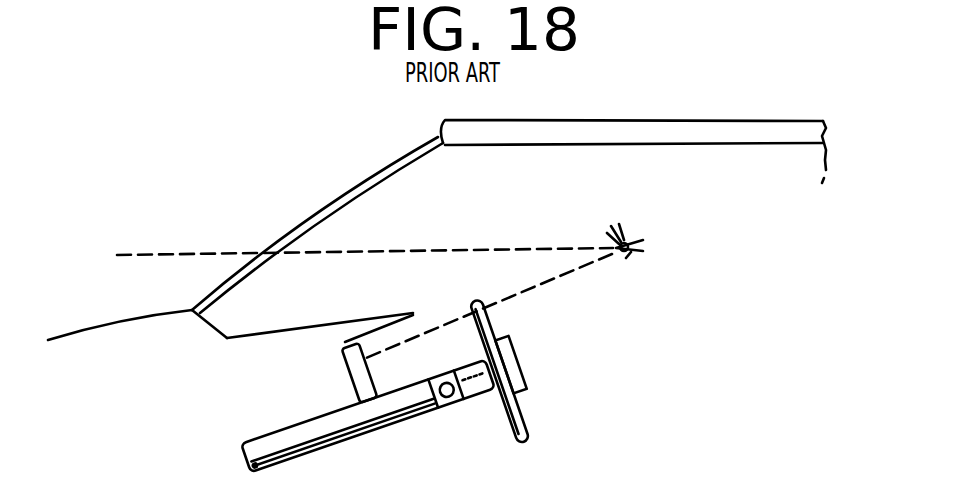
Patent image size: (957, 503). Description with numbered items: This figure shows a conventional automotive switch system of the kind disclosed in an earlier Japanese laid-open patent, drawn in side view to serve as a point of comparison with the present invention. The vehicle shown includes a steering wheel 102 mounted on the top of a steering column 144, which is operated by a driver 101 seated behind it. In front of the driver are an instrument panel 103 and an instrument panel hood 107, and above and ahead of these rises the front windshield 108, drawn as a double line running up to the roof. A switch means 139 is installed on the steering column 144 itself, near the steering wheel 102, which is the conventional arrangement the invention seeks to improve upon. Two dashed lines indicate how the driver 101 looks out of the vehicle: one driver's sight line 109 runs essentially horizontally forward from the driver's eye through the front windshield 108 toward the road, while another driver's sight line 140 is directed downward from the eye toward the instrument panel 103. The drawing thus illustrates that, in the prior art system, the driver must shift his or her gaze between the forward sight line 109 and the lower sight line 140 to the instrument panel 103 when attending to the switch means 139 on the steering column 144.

The driver 101 is at (641, 241).
The steering wheel 102 is at (527, 425).
The instrument panel 103 is at (351, 380).
The instrument panel hood 107 is at (413, 313).
The front windshield 108 is at (318, 200).
The driver's sight line 109 is at (534, 247).
The switch means 139 is at (455, 400).
The driver's sight line 140 is at (545, 287).
The steering column 144 is at (365, 435).